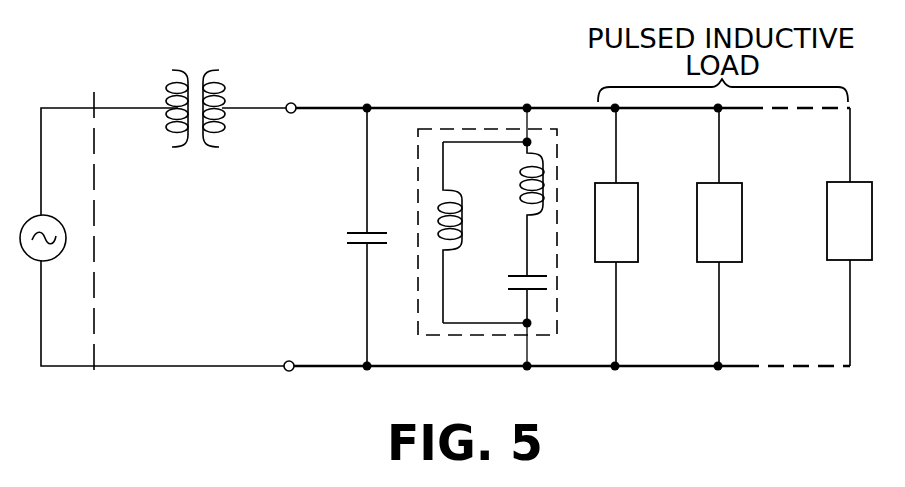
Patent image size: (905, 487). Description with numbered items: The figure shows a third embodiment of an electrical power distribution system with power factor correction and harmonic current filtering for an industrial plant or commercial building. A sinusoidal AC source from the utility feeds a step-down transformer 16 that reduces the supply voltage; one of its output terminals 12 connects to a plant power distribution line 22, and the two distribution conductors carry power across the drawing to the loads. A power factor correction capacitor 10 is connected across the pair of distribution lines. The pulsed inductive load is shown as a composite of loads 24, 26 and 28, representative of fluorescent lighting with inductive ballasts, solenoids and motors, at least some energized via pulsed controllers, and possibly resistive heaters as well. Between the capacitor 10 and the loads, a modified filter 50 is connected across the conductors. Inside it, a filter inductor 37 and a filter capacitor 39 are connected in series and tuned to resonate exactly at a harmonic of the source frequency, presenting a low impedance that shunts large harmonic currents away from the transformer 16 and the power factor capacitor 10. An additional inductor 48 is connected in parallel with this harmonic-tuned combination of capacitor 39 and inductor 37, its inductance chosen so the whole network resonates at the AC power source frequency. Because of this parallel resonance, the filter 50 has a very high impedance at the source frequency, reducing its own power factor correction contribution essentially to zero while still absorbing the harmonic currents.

The power factor correction capacitor 10 is at (346, 241).
The output terminal 12 is at (296, 103).
The step-down transformer 16 is at (168, 85).
The power distribution line 22 is at (405, 108).
The load 24 is at (601, 241).
The load 26 is at (704, 241).
The load 28 is at (835, 240).
The filter inductor 37 is at (545, 178).
The filter capacitor 39 is at (548, 283).
The inductor 48 is at (438, 208).
The modified filter 50 is at (418, 238).